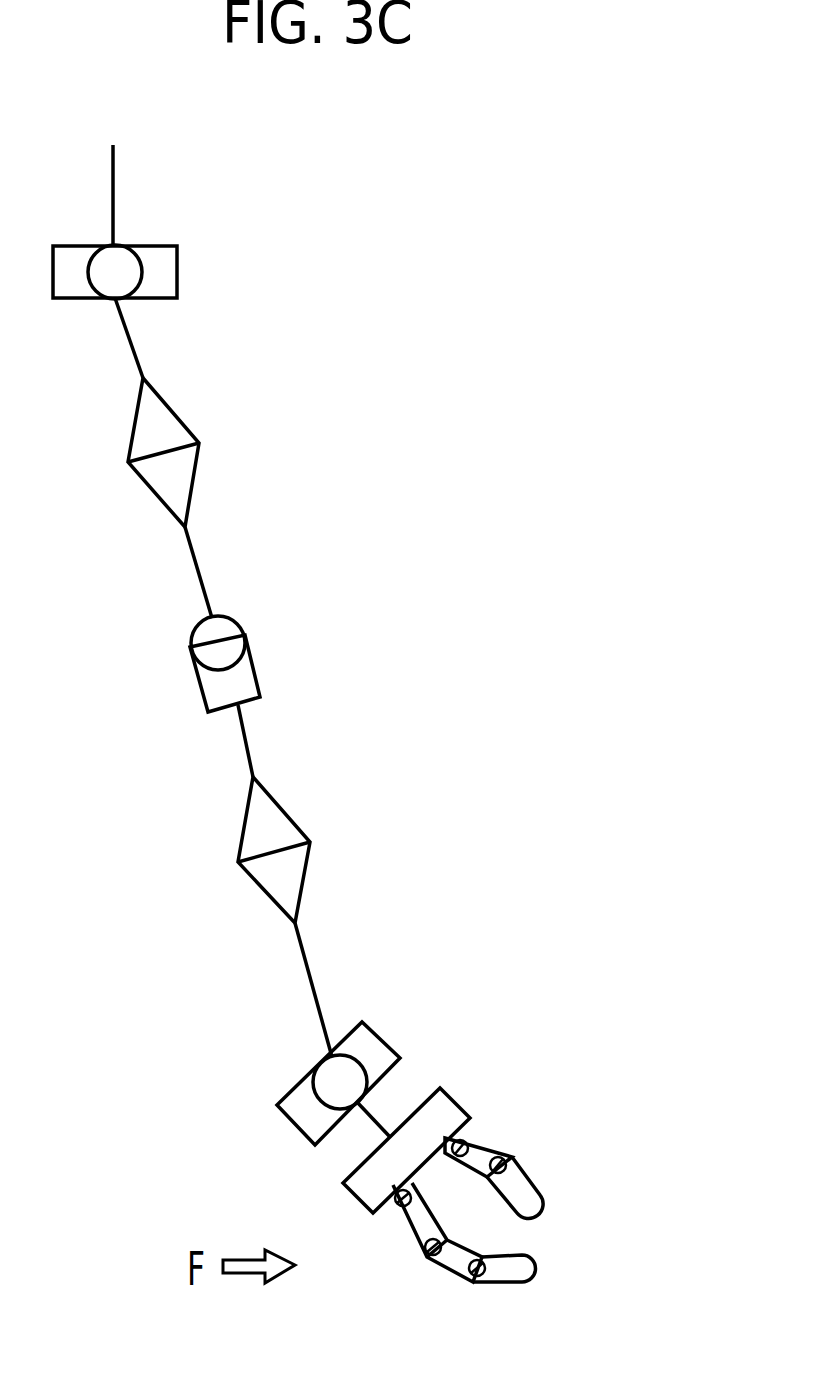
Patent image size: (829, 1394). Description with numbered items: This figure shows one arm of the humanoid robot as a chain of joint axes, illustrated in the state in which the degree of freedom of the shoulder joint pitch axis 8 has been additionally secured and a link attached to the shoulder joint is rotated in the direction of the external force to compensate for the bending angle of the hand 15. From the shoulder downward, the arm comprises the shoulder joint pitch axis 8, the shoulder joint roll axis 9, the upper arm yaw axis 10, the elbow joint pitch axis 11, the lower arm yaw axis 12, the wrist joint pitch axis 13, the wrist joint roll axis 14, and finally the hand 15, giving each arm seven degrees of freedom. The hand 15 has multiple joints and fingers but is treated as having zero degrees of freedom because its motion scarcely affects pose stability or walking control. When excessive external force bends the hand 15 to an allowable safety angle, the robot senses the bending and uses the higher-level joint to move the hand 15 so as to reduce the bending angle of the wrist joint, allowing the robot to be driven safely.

The shoulder joint pitch axis 8 is at (127, 263).
The shoulder joint roll axis 9 is at (167, 283).
The upper arm yaw axis 10 is at (175, 413).
The elbow joint pitch axis 11 is at (232, 627).
The lower arm yaw axis 12 is at (283, 810).
The wrist joint pitch axis 13 is at (330, 1087).
The wrist joint roll axis 14 is at (295, 1122).
The hand 15 is at (483, 1153).